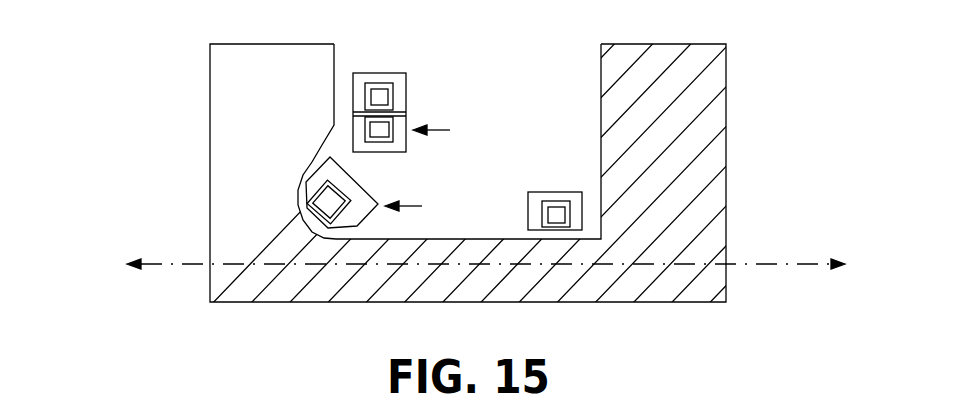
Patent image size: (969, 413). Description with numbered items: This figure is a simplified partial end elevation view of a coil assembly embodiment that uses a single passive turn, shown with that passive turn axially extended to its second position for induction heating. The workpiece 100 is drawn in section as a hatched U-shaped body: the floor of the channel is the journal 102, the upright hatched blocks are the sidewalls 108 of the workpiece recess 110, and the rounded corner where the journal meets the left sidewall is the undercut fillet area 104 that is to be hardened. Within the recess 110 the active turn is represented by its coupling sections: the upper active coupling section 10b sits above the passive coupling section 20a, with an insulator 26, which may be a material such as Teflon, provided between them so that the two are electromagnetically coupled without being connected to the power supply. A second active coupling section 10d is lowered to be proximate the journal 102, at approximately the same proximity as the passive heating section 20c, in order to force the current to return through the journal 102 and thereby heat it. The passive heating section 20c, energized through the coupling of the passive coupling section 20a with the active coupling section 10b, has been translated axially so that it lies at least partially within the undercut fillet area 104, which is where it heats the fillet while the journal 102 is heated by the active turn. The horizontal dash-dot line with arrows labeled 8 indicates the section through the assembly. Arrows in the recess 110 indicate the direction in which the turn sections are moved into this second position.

The workpiece 100 is at (208, 92).
The journal 102 is at (432, 257).
The undercut fillet area 104 is at (309, 239).
The sidewalls 108 is at (335, 49).
The workpiece recess 110 is at (525, 36).
The section line 8 is at (182, 265).
The active coupling section 10b is at (383, 83).
The active coupling section 10d is at (542, 212).
The passive coupling section 20a is at (396, 134).
The passive heating section 20c is at (341, 197).
The insulator 26 is at (408, 115).